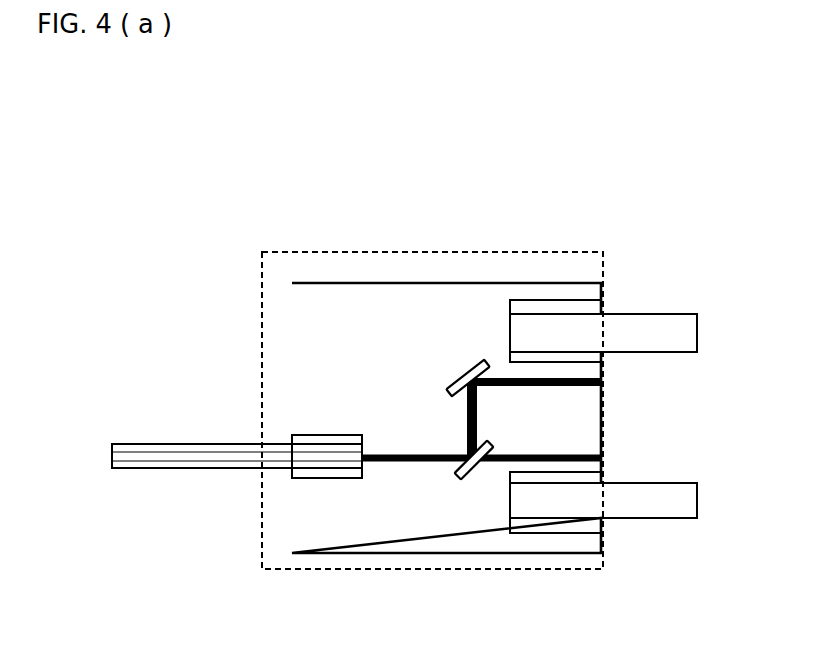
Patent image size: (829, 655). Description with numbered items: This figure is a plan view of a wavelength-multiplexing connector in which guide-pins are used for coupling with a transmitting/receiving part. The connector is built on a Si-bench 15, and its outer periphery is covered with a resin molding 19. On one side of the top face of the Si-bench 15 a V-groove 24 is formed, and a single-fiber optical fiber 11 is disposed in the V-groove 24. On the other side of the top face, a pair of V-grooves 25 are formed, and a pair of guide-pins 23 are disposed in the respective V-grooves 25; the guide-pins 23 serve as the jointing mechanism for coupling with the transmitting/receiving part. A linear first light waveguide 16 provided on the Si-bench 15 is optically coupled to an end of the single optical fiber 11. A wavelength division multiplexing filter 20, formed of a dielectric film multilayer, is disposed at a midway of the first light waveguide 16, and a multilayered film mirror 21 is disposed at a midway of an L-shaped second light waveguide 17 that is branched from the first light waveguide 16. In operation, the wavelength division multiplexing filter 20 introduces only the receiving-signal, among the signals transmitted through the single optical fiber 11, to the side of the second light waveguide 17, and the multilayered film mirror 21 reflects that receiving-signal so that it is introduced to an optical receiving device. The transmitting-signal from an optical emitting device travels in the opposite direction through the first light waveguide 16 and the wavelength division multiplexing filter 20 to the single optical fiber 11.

The single-fiber optical fiber 11 is at (163, 443).
The Si-bench 15 is at (349, 315).
The first light waveguide 16 is at (603, 455).
The second light waveguide 17 is at (603, 382).
The resin molding 19 is at (275, 252).
The wavelength division multiplexing filter 20 is at (472, 478).
The multilayered film mirror 21 is at (468, 367).
The guide-pins 23 is at (652, 337).
The V-groove 24 is at (330, 478).
The V-grooves 25 is at (566, 300).